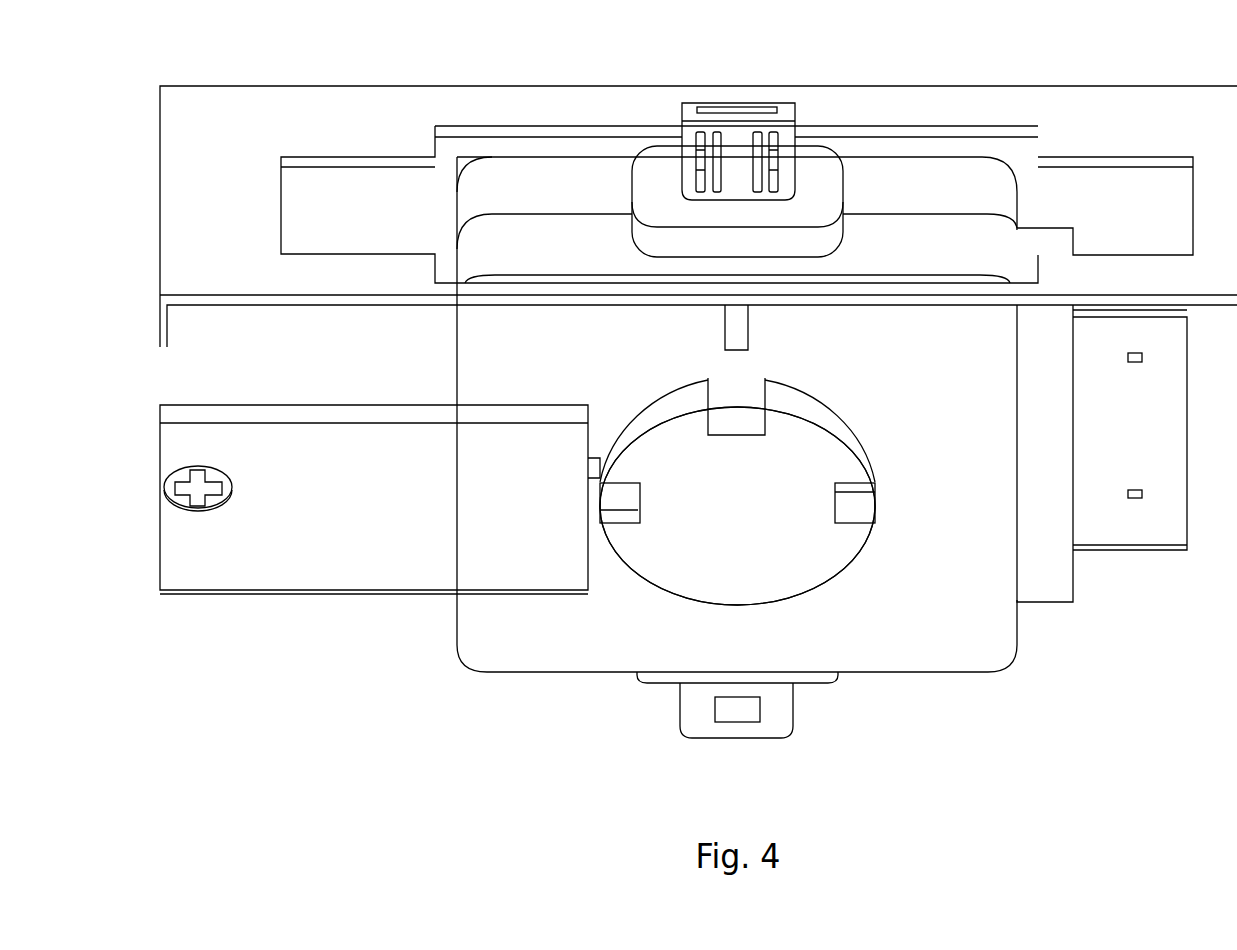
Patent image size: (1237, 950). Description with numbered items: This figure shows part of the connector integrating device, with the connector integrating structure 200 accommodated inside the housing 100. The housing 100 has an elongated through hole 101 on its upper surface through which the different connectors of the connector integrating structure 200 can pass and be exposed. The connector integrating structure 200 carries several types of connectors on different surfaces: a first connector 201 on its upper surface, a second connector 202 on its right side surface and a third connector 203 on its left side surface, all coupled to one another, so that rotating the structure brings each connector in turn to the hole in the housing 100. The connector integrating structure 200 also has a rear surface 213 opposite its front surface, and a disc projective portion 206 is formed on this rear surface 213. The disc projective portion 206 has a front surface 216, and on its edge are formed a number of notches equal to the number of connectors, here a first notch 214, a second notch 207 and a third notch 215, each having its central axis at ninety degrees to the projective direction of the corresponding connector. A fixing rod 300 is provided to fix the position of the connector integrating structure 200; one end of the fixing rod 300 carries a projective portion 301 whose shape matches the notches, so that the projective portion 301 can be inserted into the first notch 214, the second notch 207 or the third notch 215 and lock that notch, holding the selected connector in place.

The housing 100 is at (836, 117).
The elongated through hole 101 is at (1078, 182).
The second connector 202 is at (733, 145).
The first notch 214 is at (725, 397).
The connector integrating structure 200 is at (990, 722).
The rear surface 213 is at (995, 637).
The third connector 203 is at (698, 707).
The first connector 201 is at (1098, 515).
The front surface of the disc projective portion 216 is at (658, 567).
The disc projective portion 206 is at (843, 565).
The second notch 207 is at (627, 513).
The third notch 215 is at (857, 503).
The fixing rod 300 is at (305, 487).
The projective portion 301 is at (602, 493).